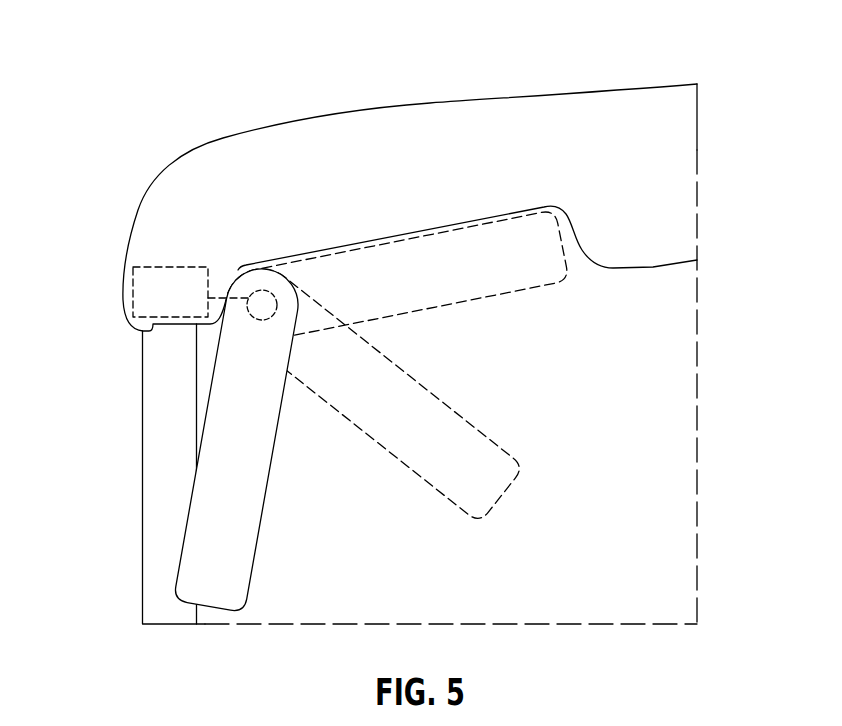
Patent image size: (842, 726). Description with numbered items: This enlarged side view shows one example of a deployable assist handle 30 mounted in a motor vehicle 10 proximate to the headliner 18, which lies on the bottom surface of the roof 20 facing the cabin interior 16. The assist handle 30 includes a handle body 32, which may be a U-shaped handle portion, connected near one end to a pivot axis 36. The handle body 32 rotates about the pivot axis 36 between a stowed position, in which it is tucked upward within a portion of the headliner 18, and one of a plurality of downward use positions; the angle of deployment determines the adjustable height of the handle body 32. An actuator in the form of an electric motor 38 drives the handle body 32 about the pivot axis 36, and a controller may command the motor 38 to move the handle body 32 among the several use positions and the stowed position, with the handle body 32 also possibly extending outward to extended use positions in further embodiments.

The motor vehicle 10 is at (455, 318).
The cabin interior 16 is at (640, 435).
The headliner 18 is at (653, 267).
The roof 20 is at (223, 139).
The deployable assist handle 30 is at (302, 411).
The handle body 32 is at (223, 485).
The pivot axis 36 is at (253, 291).
The electric motor 38 is at (146, 267).